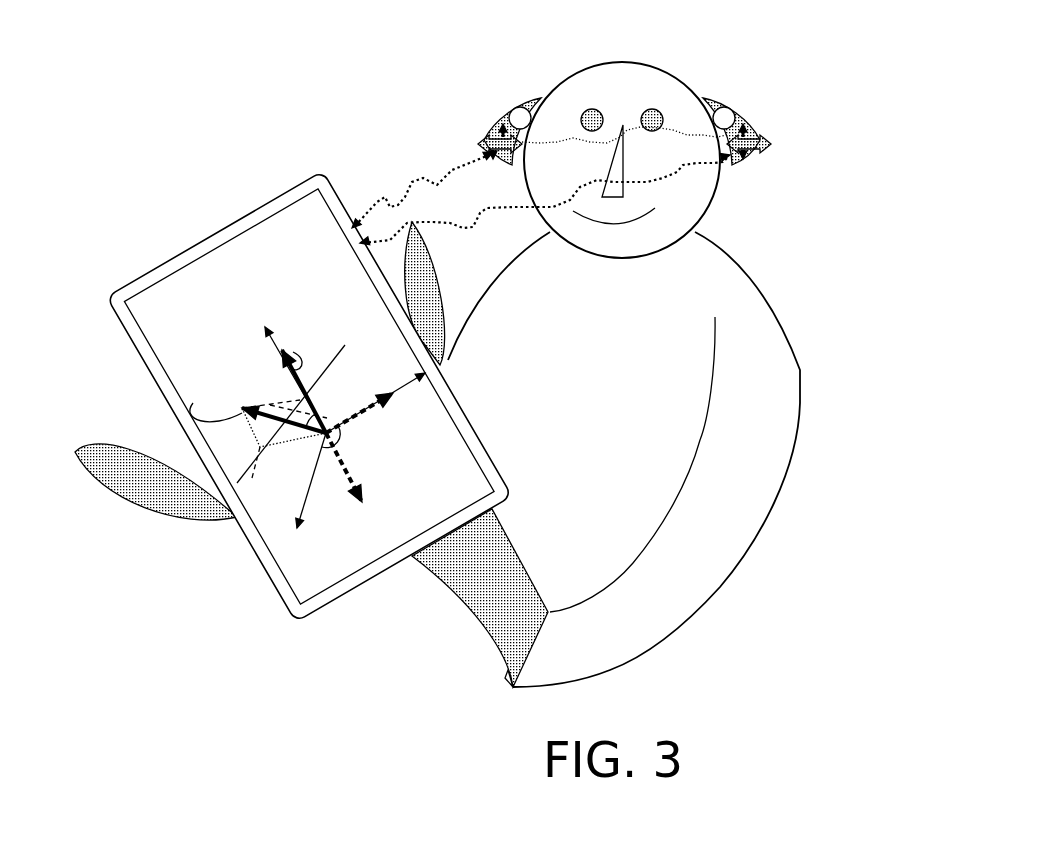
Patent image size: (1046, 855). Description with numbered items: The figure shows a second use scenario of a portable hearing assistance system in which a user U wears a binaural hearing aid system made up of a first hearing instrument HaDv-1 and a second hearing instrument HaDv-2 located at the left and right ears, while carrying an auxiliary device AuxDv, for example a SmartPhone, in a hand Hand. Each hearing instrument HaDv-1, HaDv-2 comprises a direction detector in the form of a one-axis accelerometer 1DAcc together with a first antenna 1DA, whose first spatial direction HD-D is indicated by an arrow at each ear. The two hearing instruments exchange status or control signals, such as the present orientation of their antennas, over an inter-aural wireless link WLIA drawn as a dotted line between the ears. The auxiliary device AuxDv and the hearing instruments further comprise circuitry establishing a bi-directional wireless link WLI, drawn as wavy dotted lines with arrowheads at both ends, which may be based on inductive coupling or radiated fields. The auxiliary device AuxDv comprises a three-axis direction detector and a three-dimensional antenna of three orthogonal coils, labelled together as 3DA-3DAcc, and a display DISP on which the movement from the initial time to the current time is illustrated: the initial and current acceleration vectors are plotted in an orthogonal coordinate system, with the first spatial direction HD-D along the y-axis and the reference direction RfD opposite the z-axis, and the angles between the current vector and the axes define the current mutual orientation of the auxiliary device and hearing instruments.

The user U is at (684, 77).
The first hearing instrument HaDv-1 is at (525, 97).
The second hearing instrument HaDv-2 is at (740, 115).
The one-axis accelerometer 1DAcc is at (502, 122).
The first spatial direction HD-D is at (808, 115).
The first antenna 1DA is at (487, 155).
The inter-aural wireless link WLIA is at (557, 140).
The wireless link WLI is at (455, 225).
The hand Hand is at (160, 473).
The auxiliary device AuxDv is at (273, 593).
The display DISP is at (350, 577).
The reference direction RfD is at (365, 467).
The three-dimensional antenna and three-axis direction detector 3DA-3DAcc is at (337, 431).